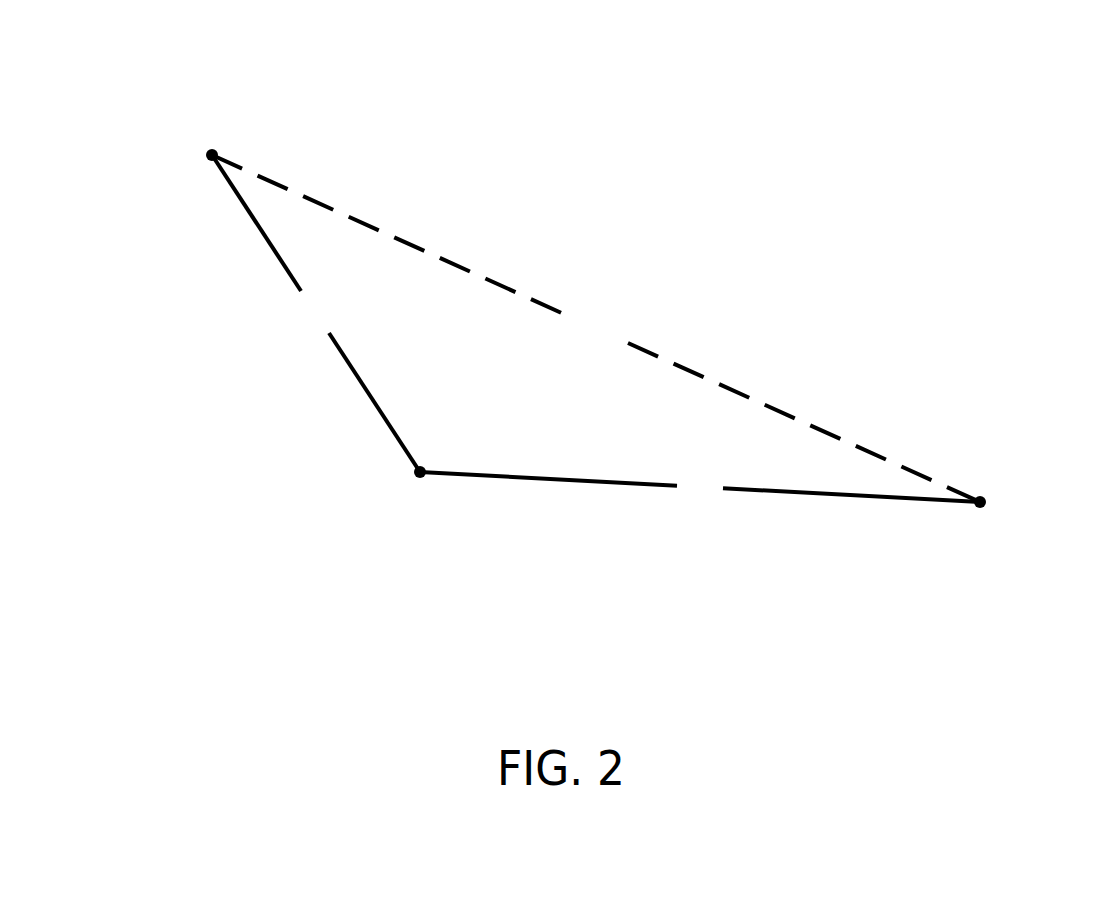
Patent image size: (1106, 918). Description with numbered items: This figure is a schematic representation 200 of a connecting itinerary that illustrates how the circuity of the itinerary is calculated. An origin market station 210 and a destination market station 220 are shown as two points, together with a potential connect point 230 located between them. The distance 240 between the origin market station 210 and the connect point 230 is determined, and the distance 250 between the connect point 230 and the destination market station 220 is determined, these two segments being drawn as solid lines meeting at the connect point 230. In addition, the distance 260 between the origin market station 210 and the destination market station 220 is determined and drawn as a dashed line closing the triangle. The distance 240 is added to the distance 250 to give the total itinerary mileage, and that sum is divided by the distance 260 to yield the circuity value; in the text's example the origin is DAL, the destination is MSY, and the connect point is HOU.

The triangulation diagram 200 is at (585, 301).
The origin market station 210 is at (207, 149).
The destination market station 220 is at (988, 501).
The potential connect point 230 is at (414, 473).
The distance 240 is at (316, 313).
The distance 250 is at (700, 487).
The distance 260 is at (596, 328).